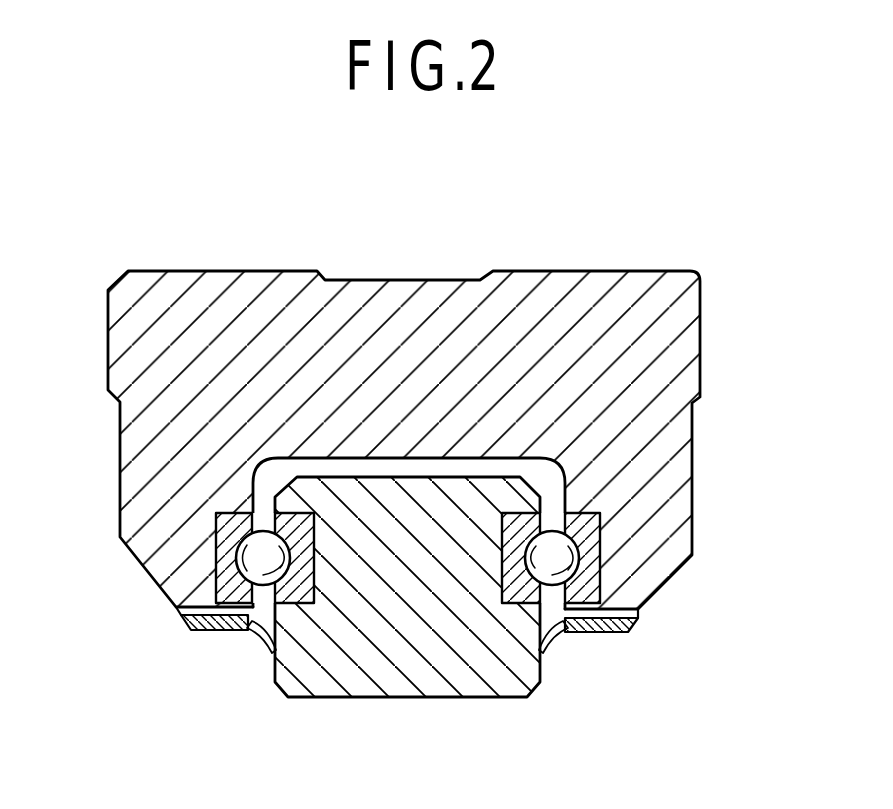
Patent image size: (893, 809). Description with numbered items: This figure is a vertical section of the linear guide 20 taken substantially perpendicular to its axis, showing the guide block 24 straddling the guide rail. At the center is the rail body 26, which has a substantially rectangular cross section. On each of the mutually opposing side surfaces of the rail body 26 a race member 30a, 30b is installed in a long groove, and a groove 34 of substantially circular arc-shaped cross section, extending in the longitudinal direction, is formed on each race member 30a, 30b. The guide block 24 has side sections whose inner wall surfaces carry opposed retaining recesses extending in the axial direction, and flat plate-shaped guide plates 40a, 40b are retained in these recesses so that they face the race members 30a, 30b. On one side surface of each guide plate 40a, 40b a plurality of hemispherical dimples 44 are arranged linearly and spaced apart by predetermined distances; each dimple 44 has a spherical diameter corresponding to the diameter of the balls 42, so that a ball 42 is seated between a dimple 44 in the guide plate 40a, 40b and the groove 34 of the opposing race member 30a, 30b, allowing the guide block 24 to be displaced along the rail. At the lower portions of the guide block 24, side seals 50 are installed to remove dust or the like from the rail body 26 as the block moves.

The linear guide 20 is at (720, 155).
The guide block 24 is at (653, 268).
The rail body 26 is at (380, 698).
The race member 30a is at (297, 587).
The race member 30b is at (518, 587).
The groove 34 is at (303, 487).
The guide plate 40a is at (216, 522).
The guide plate 40b is at (600, 523).
The ball 42 is at (263, 536).
The hemispherical dimple 44 is at (238, 563).
The side seal 50 is at (220, 633).